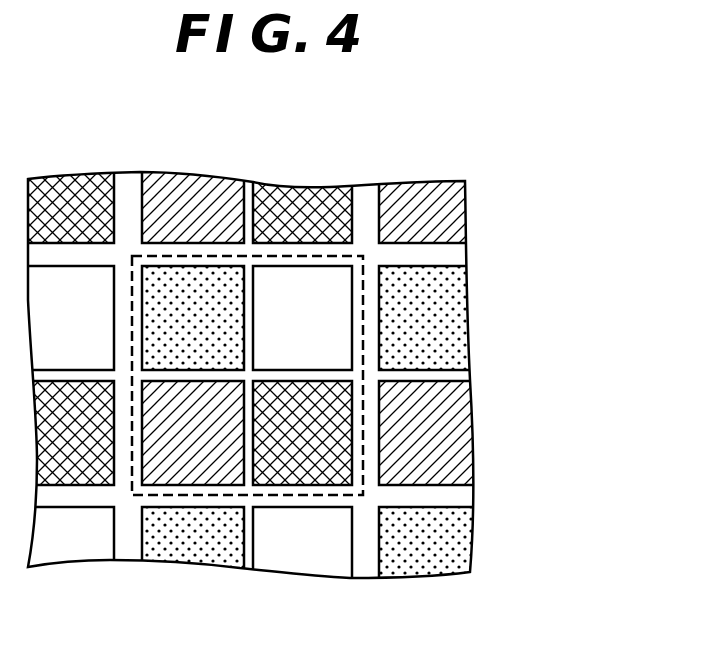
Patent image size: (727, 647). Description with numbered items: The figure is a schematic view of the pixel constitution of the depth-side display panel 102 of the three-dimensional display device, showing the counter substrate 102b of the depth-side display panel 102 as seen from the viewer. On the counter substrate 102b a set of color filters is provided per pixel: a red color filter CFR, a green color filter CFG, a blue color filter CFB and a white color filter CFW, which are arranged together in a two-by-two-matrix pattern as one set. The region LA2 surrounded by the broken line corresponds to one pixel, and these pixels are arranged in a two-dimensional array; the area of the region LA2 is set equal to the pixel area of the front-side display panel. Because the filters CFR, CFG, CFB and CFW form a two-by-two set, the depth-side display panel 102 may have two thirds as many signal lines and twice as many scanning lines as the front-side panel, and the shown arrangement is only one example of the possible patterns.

The counter substrate 102b is at (300, 375).
The depth-side display panel 102 is at (470, 212).
The region surrounded by a broken line LA2 is at (359, 253).
The red color filter CFR is at (198, 293).
The white color filter CFW is at (298, 312).
The green color filter CFG is at (188, 440).
The blue color filter CFB is at (298, 455).